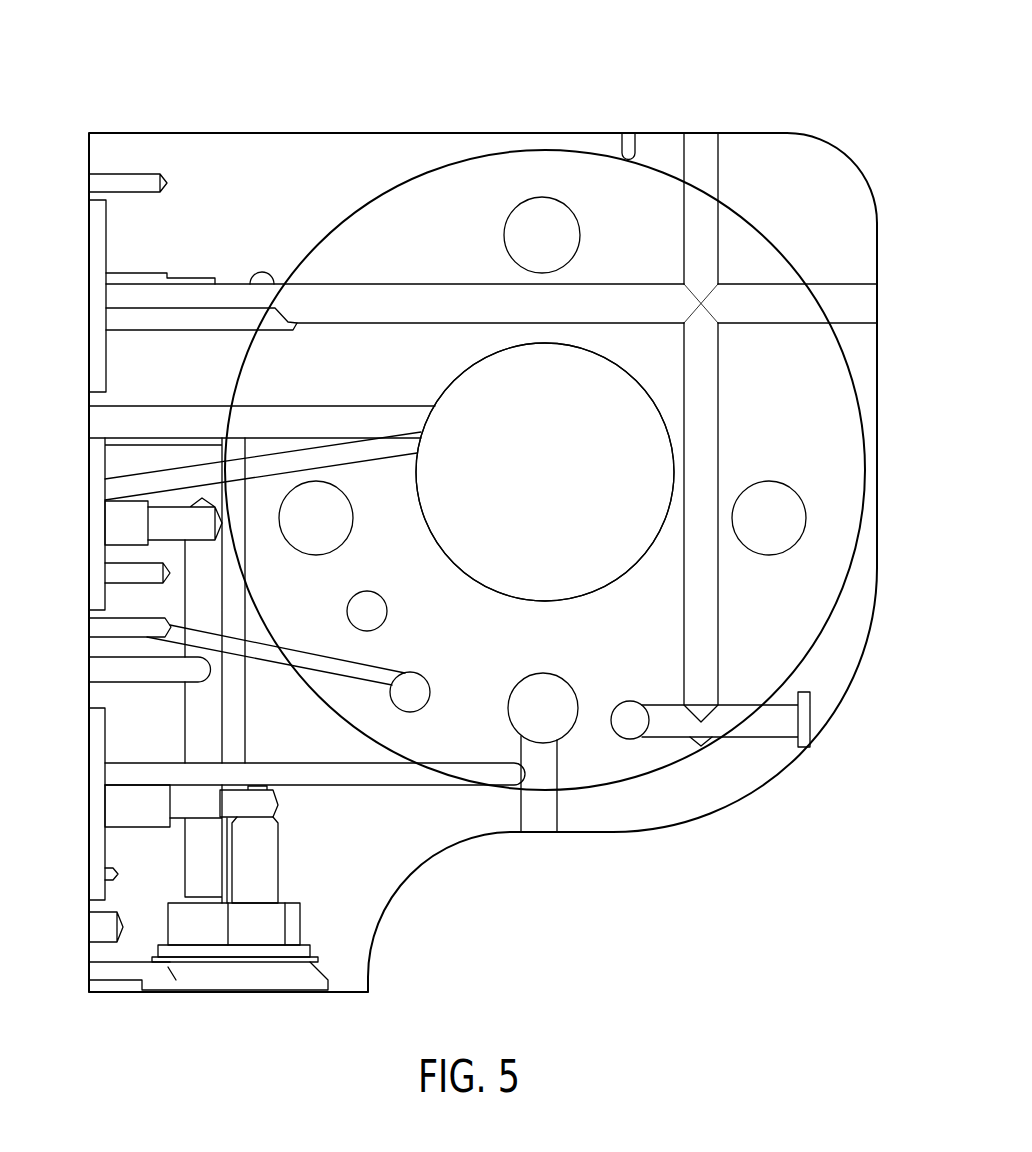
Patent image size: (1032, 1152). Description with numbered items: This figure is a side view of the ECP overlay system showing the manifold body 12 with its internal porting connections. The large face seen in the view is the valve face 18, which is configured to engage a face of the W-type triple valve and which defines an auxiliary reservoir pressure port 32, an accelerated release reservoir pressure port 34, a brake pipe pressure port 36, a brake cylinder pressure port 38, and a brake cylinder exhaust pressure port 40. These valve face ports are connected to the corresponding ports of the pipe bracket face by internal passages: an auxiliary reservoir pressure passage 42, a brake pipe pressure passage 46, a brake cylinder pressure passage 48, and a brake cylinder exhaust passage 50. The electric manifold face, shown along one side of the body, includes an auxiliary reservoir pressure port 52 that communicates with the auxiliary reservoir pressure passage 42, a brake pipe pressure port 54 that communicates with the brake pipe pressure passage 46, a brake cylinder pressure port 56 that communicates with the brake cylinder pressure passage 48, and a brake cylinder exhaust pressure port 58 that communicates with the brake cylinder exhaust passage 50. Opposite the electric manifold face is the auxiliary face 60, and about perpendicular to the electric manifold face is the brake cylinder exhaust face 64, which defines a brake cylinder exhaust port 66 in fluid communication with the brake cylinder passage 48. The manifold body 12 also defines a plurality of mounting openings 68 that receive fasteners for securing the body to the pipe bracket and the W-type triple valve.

The manifold body 12 is at (97, 75).
The valve face 18 is at (820, 198).
The auxiliary reservoir pressure port 32 is at (604, 590).
The accelerated release reservoir pressure port 34 is at (372, 610).
The brake pipe pressure port 36 is at (412, 692).
The brake cylinder pressure port 38 is at (537, 694).
The brake cylinder exhaust pressure port 40 is at (632, 722).
The auxiliary reservoir pressure passage 42 is at (542, 470).
The brake pipe pressure passage 46 is at (352, 668).
The brake cylinder pressure passage 48 is at (342, 775).
The brake cylinder exhaust passage 50 is at (618, 292).
The auxiliary reservoir pressure port 52 is at (112, 490).
The brake pipe pressure port 54 is at (127, 617).
The brake cylinder pressure port 56 is at (115, 516).
The brake cylinder exhaust pressure port 58 is at (118, 294).
The auxiliary face 60 is at (878, 258).
The brake cylinder exhaust face 64 is at (117, 995).
The brake cylinder exhaust port 66 is at (225, 975).
The mounting openings 68 is at (542, 233).